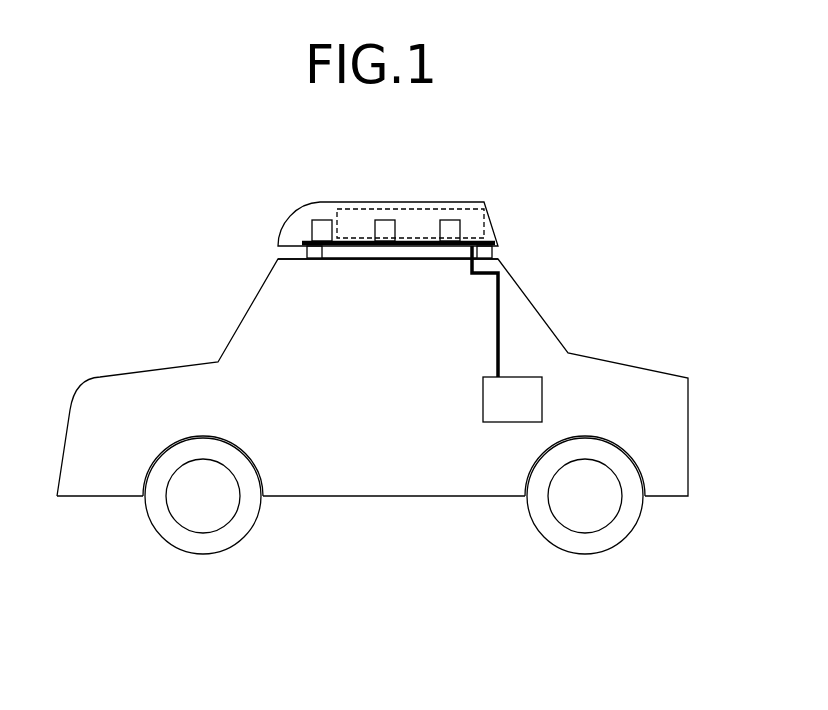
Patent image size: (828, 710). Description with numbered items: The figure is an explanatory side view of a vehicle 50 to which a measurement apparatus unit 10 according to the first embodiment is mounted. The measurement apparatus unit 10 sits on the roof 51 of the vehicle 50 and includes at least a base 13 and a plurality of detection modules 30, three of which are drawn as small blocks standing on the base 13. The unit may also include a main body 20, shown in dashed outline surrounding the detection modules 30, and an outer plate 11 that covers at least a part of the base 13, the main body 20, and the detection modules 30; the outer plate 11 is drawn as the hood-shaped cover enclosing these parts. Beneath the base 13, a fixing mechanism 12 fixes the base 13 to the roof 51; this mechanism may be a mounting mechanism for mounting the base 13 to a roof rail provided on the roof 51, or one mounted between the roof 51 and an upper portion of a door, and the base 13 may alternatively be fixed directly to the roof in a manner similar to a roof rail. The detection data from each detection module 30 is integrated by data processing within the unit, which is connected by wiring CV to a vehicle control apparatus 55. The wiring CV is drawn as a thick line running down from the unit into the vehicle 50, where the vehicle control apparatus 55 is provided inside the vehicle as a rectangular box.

The measurement apparatus unit 10 is at (408, 218).
The outer plate 11 is at (345, 202).
The fixing mechanism 12 is at (492, 253).
The base 13 is at (495, 242).
The main body 20 is at (430, 208).
The detection modules 30 is at (315, 228).
The vehicle 50 is at (128, 375).
The roof 51 is at (285, 258).
The vehicle control apparatus 55 is at (498, 423).
The wiring CV is at (497, 343).